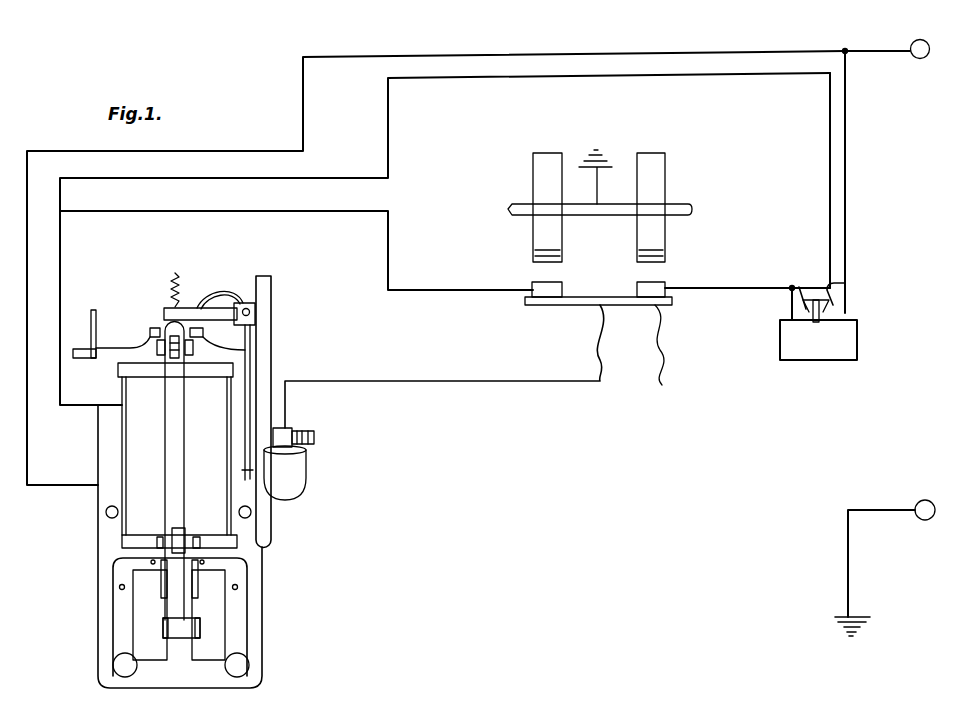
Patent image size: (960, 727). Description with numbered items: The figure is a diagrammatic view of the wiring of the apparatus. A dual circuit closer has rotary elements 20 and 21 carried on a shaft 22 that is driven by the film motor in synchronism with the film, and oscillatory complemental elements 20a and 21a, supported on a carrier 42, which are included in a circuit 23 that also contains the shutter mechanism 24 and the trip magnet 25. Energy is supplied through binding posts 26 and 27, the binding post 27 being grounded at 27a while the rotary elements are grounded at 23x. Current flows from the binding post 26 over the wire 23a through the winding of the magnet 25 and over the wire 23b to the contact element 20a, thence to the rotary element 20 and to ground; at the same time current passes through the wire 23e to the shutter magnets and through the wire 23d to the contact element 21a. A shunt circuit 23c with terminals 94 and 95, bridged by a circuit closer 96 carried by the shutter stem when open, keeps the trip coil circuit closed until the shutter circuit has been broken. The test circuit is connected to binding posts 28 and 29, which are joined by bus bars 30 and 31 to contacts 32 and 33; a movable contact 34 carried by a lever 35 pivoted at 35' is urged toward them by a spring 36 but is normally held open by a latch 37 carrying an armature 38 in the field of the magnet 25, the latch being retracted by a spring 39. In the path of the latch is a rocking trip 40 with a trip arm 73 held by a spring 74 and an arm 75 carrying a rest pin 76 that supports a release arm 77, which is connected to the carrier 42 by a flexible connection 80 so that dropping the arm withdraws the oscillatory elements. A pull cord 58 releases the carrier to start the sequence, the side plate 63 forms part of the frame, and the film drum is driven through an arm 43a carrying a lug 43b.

The rotary element 20 is at (532, 180).
The rotary element 21 is at (666, 180).
The shaft 22 is at (690, 210).
The circuit 23 is at (848, 163).
The wire 23a is at (505, 56).
The wire 23b is at (392, 262).
The shunt circuit 23c is at (455, 79).
The wire 23d is at (733, 290).
The wire 23e is at (845, 247).
The ground 23x is at (603, 156).
The oscillatory complemental element 20a is at (560, 286).
The oscillatory complemental element 21a is at (665, 285).
The shutter mechanism 24 is at (781, 361).
The trip magnet 25 is at (132, 455).
The binding post 26 is at (918, 58).
The binding post 27 is at (923, 500).
The ground 27a is at (868, 626).
The binding post 28 is at (126, 677).
The binding post 29 is at (236, 677).
The bus bar 30 is at (113, 615).
The bus bar 31 is at (238, 584).
The contact 32 is at (162, 592).
The contact 33 is at (196, 594).
The contact 34 is at (163, 638).
The lever 35 is at (189, 471).
The pivot 35' is at (144, 542).
The spring 36 is at (172, 534).
The latch 37 is at (172, 360).
The armature 38 is at (152, 330).
The spring 39 is at (172, 280).
The trip 40 is at (246, 300).
The carrier 42 is at (570, 305).
The arm 43a is at (90, 315).
The lug 43b is at (79, 358).
The pull cord 58 is at (665, 338).
The side plate 63 is at (272, 292).
The trip arm 73 is at (194, 310).
The spring 74 is at (217, 290).
The arm 75 is at (246, 420).
The rest pin 76 is at (247, 480).
The release arm 77 is at (307, 460).
The flexible connection 80 is at (602, 360).
The terminal 94 is at (798, 288).
The terminal 95 is at (838, 274).
The circuit closer 96 is at (832, 302).